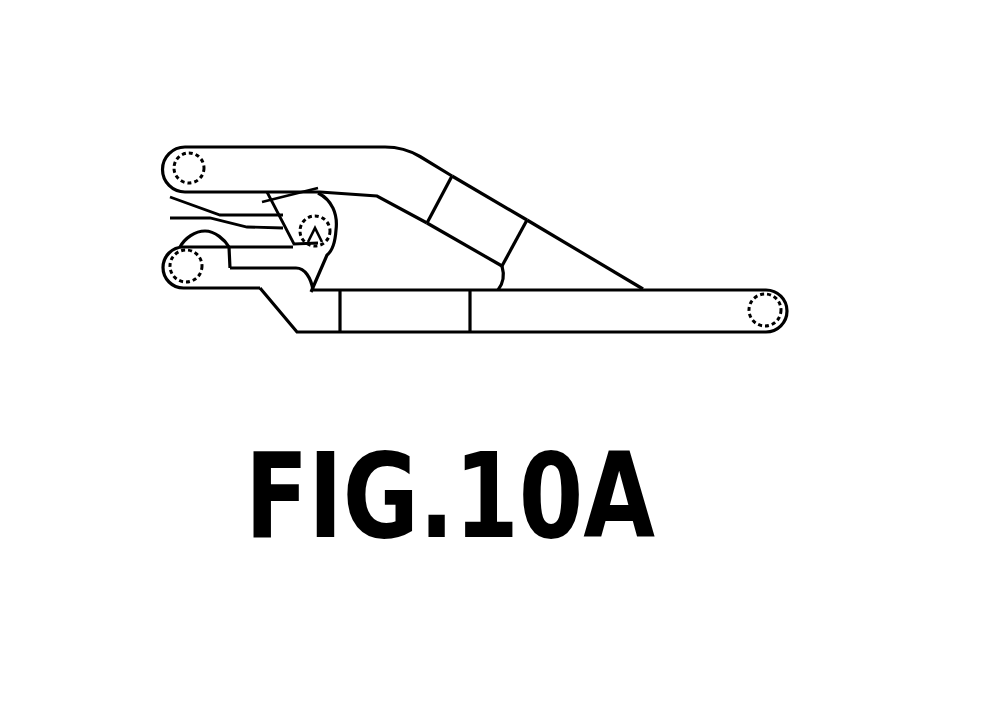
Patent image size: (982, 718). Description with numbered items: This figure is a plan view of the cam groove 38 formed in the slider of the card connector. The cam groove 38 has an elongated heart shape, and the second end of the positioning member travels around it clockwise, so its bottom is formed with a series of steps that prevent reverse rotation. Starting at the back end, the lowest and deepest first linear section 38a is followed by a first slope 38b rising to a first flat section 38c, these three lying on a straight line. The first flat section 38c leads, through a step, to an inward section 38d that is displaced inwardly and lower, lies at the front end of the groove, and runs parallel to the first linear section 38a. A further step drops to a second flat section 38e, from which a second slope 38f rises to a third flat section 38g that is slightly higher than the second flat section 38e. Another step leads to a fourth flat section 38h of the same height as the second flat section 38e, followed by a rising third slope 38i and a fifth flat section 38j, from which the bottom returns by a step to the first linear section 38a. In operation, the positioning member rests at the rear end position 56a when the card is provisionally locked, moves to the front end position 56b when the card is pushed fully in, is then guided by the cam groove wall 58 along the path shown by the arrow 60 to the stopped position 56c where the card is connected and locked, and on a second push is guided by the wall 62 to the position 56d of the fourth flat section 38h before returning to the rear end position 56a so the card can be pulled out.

The cam groove 38 is at (566, 130).
The first linear section 38a is at (548, 318).
The first slope 38b is at (428, 318).
The first flat section 38c is at (327, 322).
The inward section 38d is at (212, 280).
The second flat section 38e is at (170, 218).
The second slope 38f is at (318, 188).
The third flat section 38g is at (267, 192).
The fourth flat section 38h is at (300, 157).
The third slope 38i is at (488, 205).
The fifth flat section 38j is at (570, 257).
The rear end position 56a is at (770, 325).
The front end position 56b is at (172, 282).
The stopped position 56c is at (334, 236).
The position of the fourth flat section 56d is at (188, 155).
The cam groove wall 58 is at (311, 250).
The arrow 60 is at (185, 240).
The wall 62 is at (170, 197).